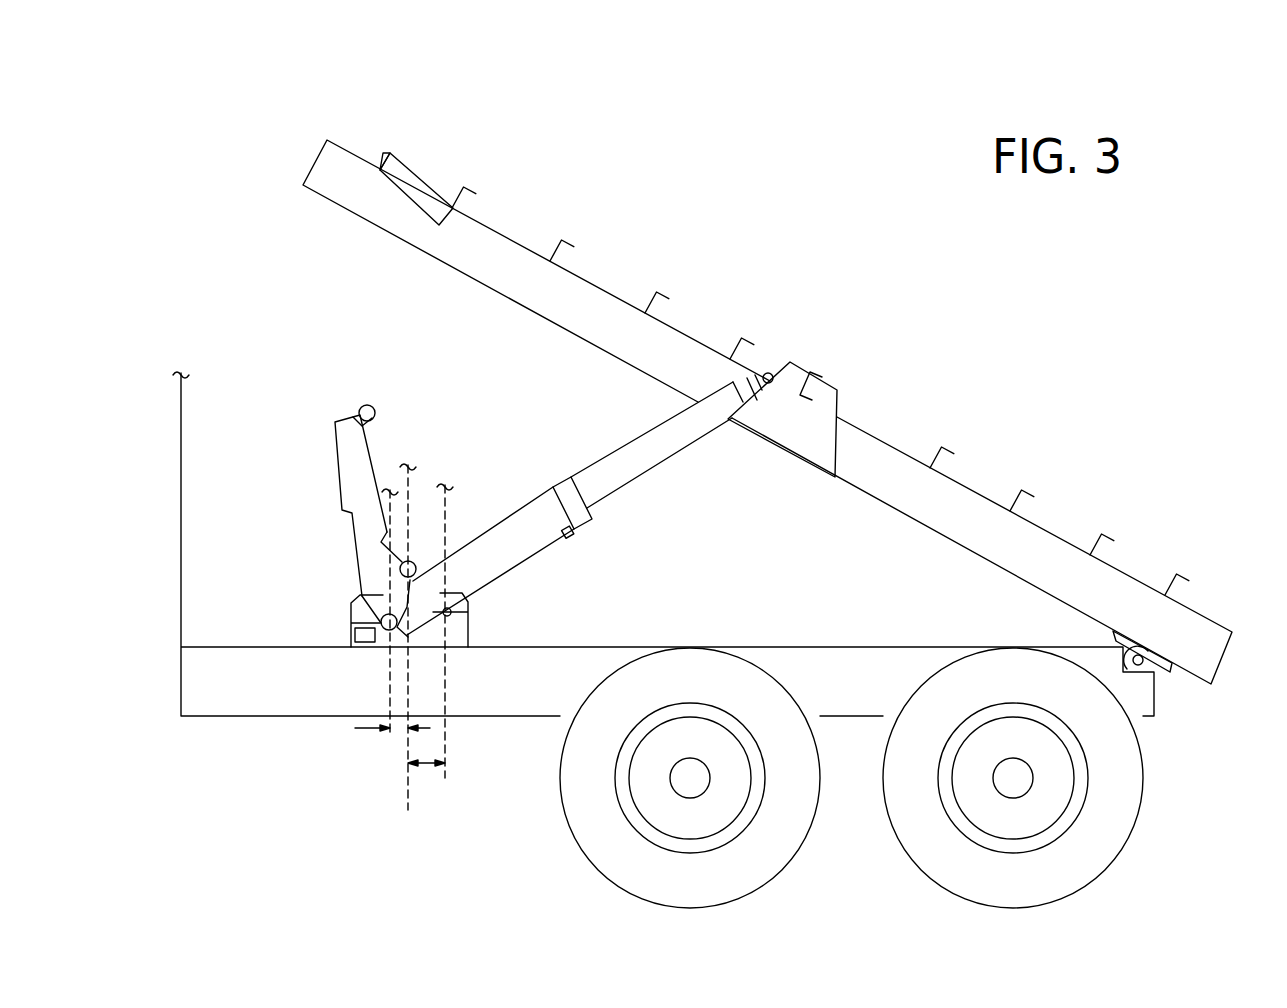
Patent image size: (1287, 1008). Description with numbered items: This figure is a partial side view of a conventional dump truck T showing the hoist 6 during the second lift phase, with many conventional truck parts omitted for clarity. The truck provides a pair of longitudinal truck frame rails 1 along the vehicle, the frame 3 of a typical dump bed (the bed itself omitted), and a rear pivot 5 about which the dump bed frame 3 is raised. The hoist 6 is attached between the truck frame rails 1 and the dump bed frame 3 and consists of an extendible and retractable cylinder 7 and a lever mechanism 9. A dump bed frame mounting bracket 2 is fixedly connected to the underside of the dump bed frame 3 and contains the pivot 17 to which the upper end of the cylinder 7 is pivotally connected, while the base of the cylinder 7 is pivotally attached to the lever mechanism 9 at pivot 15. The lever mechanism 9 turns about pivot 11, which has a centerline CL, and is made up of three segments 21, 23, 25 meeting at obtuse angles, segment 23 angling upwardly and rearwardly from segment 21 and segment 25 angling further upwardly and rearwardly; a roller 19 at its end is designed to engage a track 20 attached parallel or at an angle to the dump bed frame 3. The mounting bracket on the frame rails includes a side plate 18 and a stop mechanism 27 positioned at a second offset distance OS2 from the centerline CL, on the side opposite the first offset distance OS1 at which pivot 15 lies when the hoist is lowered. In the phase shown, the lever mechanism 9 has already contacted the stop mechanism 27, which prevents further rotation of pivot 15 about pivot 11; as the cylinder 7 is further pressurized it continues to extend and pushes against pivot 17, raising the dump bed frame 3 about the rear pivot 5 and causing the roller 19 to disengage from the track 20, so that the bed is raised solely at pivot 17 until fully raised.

The dump truck T is at (556, 122).
The truck frame rails 1 is at (375, 698).
The dump bed frame mounting bracket 2 is at (795, 430).
The dump bed frame 3 is at (585, 295).
The rear pivot 5 is at (1157, 663).
The hoist 6 is at (424, 500).
The cylinder 7 is at (533, 532).
The lever mechanism 9 is at (315, 489).
The pivot 11 is at (413, 560).
The pivot 15 is at (385, 632).
The pivot 17 is at (762, 372).
The side plate 18 is at (455, 613).
The roller 19 is at (371, 406).
The track 20 is at (425, 198).
The segment 21 is at (372, 556).
The segment 23 is at (352, 497).
The segment 25 is at (358, 412).
The stop mechanism 27 is at (378, 624).
The centerline CL is at (406, 651).
The first selected offset distance OS1 is at (423, 768).
The second offset distance OS2 is at (398, 733).